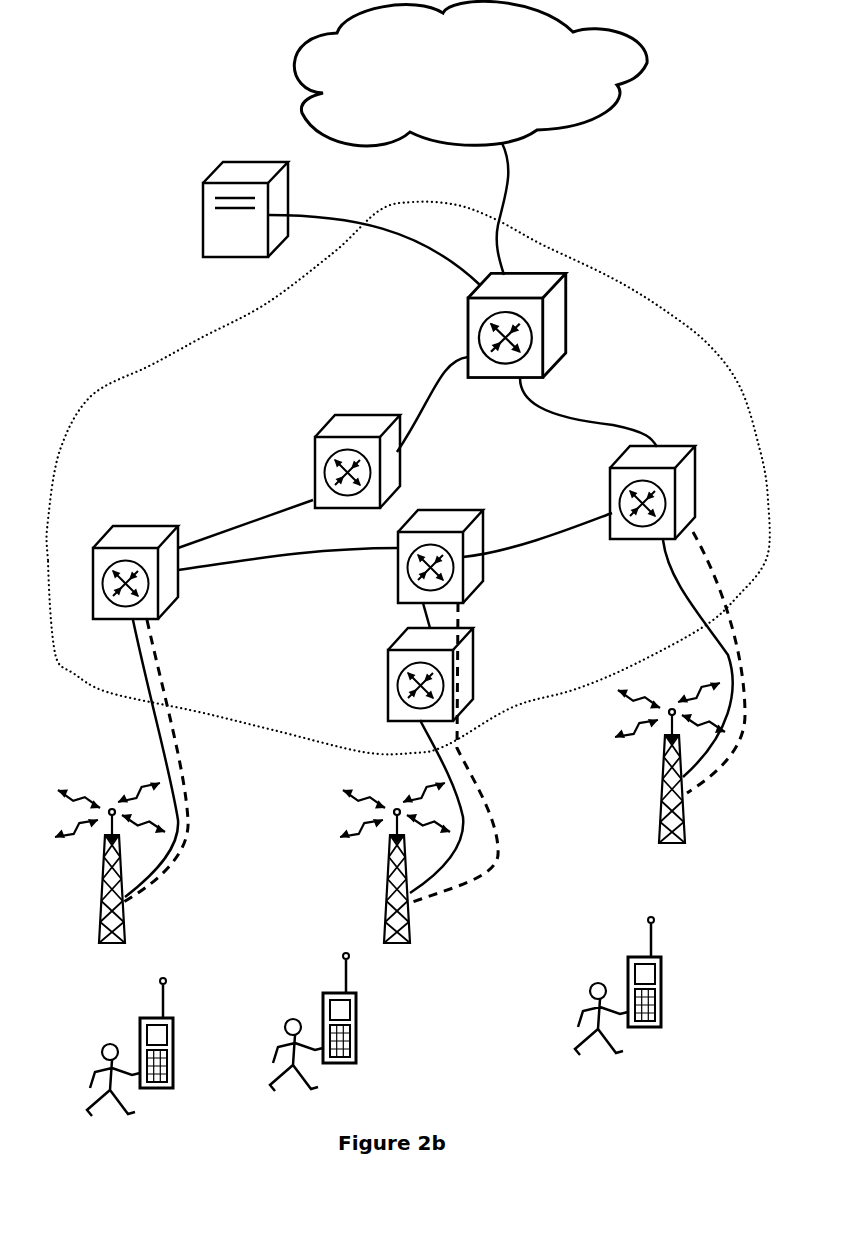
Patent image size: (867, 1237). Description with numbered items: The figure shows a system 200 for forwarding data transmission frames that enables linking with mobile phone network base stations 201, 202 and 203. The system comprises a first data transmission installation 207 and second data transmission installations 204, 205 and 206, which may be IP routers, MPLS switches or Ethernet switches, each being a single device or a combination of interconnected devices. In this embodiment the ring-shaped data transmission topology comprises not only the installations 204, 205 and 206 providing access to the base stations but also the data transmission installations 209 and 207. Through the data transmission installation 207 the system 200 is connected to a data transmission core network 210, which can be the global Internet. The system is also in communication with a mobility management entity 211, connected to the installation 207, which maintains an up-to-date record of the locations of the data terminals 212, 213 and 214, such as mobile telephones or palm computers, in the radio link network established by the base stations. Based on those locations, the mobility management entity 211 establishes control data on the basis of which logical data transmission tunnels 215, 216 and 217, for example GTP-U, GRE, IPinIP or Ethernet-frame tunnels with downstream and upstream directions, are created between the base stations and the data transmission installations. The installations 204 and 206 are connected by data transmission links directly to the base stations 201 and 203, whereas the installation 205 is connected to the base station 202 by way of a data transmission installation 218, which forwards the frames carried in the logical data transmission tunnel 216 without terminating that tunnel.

The system 200 is at (610, 278).
The base station 201 is at (125, 930).
The base station 202 is at (410, 925).
The base station 203 is at (660, 835).
The second data transmission installation 204 is at (143, 530).
The second data transmission installation 205 is at (398, 582).
The second data transmission installation 206 is at (620, 540).
The first data transmission installation 207 is at (500, 380).
The data transmission installation 209 is at (355, 415).
The data transmission core network 210 is at (473, 90).
The mobility management entity 211 is at (203, 210).
The data terminal 212 is at (175, 1038).
The data terminal 213 is at (358, 1033).
The data terminal 214 is at (663, 997).
The logical data transmission tunnel 215 is at (192, 823).
The logical data transmission tunnel 216 is at (477, 782).
The logical data transmission tunnel 217 is at (707, 773).
The data transmission installation 218 is at (388, 670).